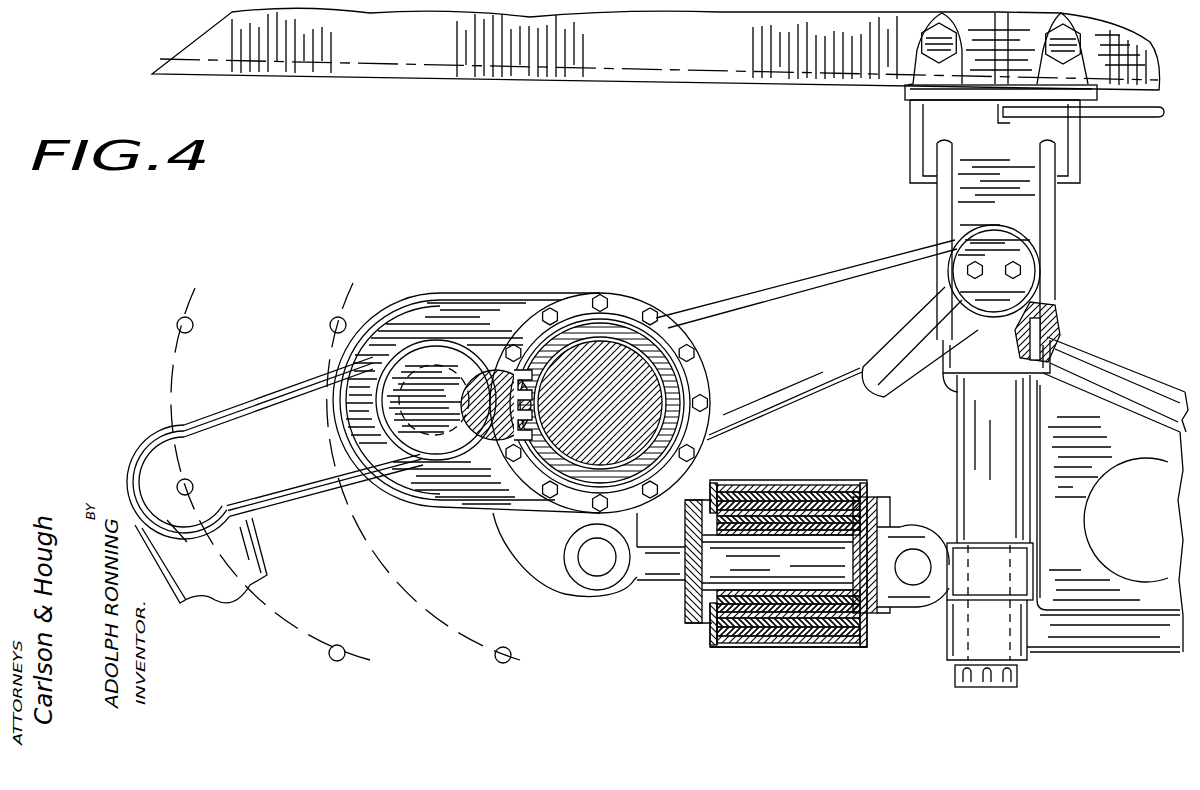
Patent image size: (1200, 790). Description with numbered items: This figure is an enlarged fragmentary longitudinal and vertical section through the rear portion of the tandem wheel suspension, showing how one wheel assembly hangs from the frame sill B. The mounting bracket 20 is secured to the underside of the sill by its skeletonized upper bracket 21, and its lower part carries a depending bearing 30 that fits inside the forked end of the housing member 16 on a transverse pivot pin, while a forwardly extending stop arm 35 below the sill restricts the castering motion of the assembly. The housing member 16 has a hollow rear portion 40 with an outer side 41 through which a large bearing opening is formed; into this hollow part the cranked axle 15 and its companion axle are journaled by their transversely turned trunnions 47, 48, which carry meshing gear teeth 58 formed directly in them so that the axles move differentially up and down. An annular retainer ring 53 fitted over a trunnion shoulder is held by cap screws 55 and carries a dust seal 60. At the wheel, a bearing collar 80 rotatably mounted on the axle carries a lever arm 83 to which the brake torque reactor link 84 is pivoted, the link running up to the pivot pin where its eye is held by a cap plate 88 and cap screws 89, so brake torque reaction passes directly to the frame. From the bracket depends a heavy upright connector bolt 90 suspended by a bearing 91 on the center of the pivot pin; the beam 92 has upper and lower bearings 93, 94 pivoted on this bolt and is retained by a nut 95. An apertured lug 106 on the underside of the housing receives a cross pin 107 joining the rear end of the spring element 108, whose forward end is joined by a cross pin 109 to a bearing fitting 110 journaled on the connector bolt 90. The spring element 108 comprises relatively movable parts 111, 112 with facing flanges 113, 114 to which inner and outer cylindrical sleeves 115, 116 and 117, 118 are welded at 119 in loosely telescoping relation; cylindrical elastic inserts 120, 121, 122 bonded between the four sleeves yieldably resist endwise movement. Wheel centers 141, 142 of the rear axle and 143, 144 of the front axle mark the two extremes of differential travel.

The frame sill B is at (375, 79).
The cranked axle 15 is at (270, 405).
The housing member 16 is at (828, 270).
The mounting bracket 20 is at (910, 143).
The upper bracket 21 is at (915, 50).
The depending bearing 30 is at (1034, 226).
The stop arm 35 is at (1121, 119).
The hollow rear portion 40 is at (466, 512).
The outer side 41 is at (447, 517).
The trunnion 47 is at (684, 387).
The trunnion 48 is at (496, 370).
The retainer ring 53 is at (632, 300).
The cap screws 55 is at (600, 294).
The gear teeth 58 is at (507, 362).
The dust seal 60 is at (681, 372).
The bearing collar 80 is at (158, 447).
The lever arm 83 is at (196, 605).
The brake torque reactor link 84 is at (913, 320).
The cap plate 88 is at (1040, 259).
The cap screws 89 is at (983, 279).
The connector bolt 90 is at (973, 476).
The bearing 91 is at (1055, 320).
The beam 92 is at (1141, 378).
The upper bearing 93 is at (948, 388).
The lower bearing 94 is at (1022, 645).
The nut 95 is at (1013, 688).
The apertured lug 106 is at (553, 537).
The cross pin 107 is at (597, 576).
The spring element 108 is at (764, 648).
The cross pin 109 is at (915, 584).
The bearing fitting 110 is at (1016, 562).
The movable part 111 is at (653, 572).
The movable part 112 is at (877, 527).
The flange 113 is at (683, 604).
The flange 114 is at (871, 618).
The inner cylindrical sleeve 115 is at (767, 590).
The outer cylindrical sleeve 116 is at (703, 633).
The inner cylindrical sleeve 117 is at (817, 588).
The outer cylindrical sleeve 118 is at (790, 648).
The weld 119 is at (874, 500).
The elastic insert 120 is at (747, 538).
The elastic insert 121 is at (792, 485).
The elastic insert 122 is at (845, 483).
The wheel center 141 is at (192, 327).
The wheel center 142 is at (342, 660).
The wheel center 143 is at (330, 325).
The wheel center 144 is at (502, 664).